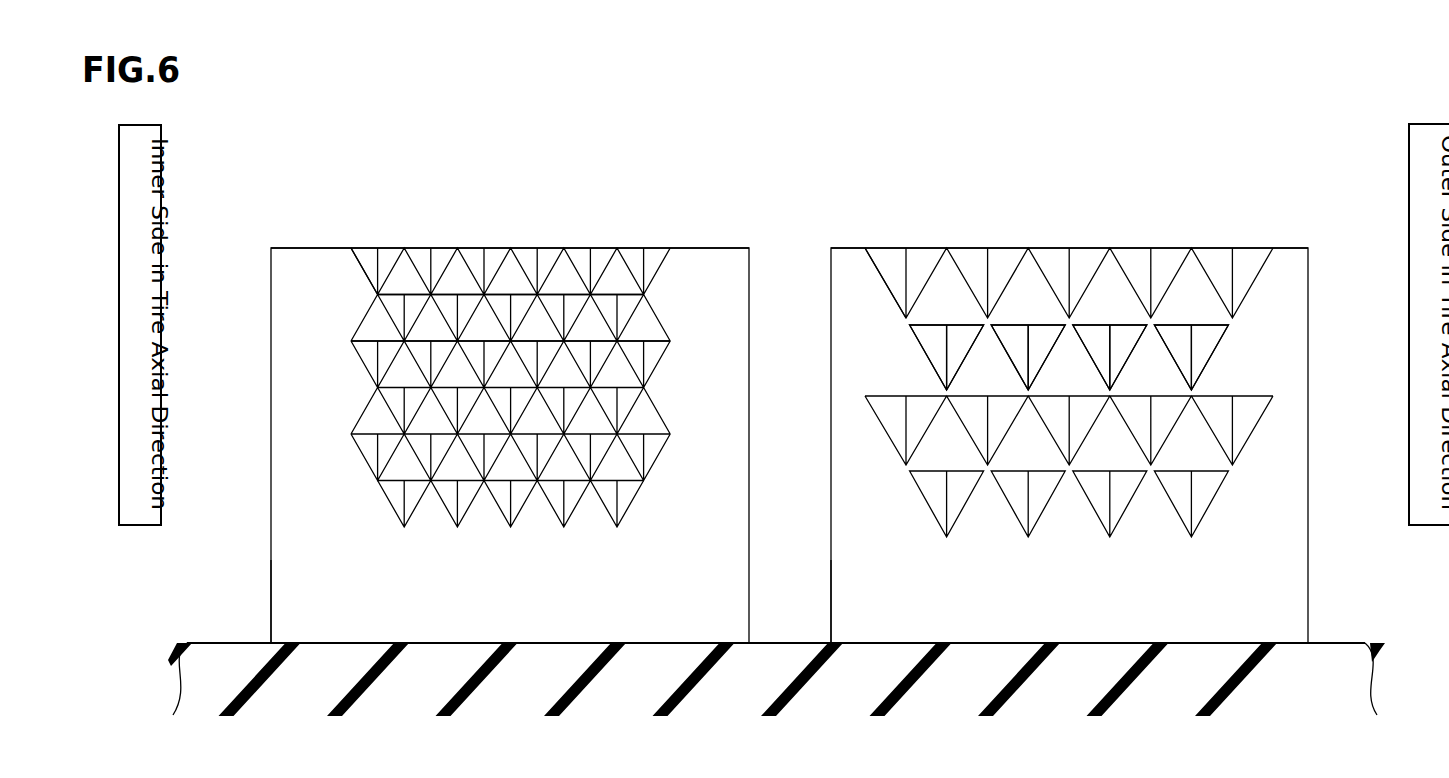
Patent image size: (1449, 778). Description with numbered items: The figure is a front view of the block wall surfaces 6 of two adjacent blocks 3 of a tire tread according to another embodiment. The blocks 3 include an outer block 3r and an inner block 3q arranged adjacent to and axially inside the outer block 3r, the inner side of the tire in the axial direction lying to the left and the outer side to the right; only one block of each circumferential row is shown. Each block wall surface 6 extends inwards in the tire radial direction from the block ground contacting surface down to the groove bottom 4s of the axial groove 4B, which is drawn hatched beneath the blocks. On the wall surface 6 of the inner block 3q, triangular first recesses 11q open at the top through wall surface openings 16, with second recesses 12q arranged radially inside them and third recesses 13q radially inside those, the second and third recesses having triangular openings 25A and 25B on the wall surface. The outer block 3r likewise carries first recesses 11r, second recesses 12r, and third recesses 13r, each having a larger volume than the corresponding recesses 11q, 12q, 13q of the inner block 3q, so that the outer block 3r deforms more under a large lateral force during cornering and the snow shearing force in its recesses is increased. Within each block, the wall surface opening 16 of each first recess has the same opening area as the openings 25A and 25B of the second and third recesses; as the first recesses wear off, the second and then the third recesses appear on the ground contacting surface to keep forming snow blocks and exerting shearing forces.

The block 3 is at (857, 201).
The inner block 3q is at (270, 618).
The outer block 3r is at (830, 602).
The axial groove 4B is at (1282, 594).
The groove bottom 4s is at (1295, 643).
The block wall surface 6 is at (303, 566).
The inner first recess 11q is at (580, 266).
The second recess of inner block 12q is at (497, 307).
The third recess of inner block 13q is at (387, 350).
The outer first recess 11r is at (1135, 270).
The second recess of outer block 12r is at (1018, 335).
The third recess of outer block 13r is at (972, 412).
The wall surface opening 16 is at (365, 262).
The opening of second recess 25A is at (625, 308).
The opening of third recess 25B is at (360, 355).